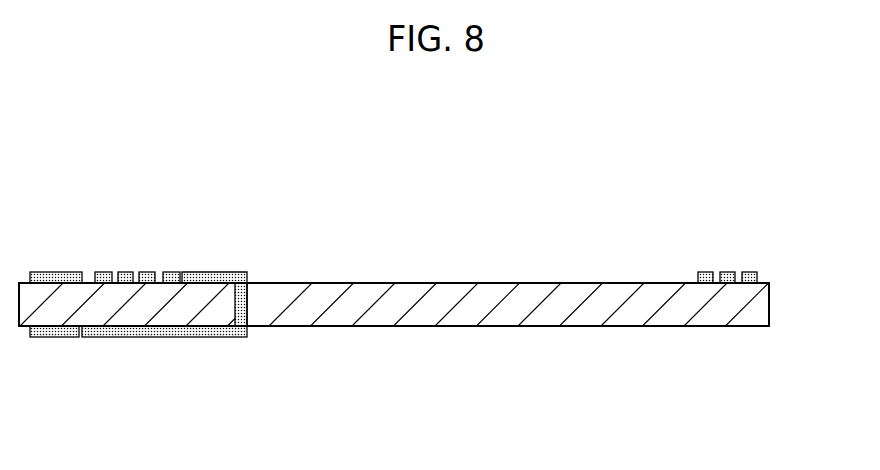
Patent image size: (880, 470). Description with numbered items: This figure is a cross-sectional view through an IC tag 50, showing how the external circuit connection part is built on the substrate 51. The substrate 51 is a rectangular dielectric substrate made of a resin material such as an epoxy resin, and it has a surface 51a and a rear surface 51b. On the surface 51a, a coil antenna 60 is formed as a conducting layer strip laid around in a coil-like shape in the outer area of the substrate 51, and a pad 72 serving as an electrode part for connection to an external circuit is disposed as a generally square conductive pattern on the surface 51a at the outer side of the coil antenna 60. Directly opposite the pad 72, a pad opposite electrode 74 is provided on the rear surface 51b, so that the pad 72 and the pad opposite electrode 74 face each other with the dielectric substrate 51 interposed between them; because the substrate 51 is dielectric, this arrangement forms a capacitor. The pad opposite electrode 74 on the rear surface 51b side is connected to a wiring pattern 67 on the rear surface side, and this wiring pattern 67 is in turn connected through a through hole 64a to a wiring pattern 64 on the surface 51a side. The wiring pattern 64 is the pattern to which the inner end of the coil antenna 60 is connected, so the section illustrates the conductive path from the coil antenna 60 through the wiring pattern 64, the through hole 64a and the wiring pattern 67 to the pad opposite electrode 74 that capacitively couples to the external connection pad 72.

The IC tag 50 is at (568, 332).
The substrate 51 is at (769, 295).
The surface 51a is at (762, 282).
The rear surface 51b is at (752, 328).
The coil antenna 60 is at (187, 267).
The wiring pattern 64 is at (233, 272).
The through hole 64a is at (247, 305).
The wiring pattern 67 is at (208, 338).
The pad 72 is at (57, 272).
The pad opposite electrode 74 is at (45, 338).